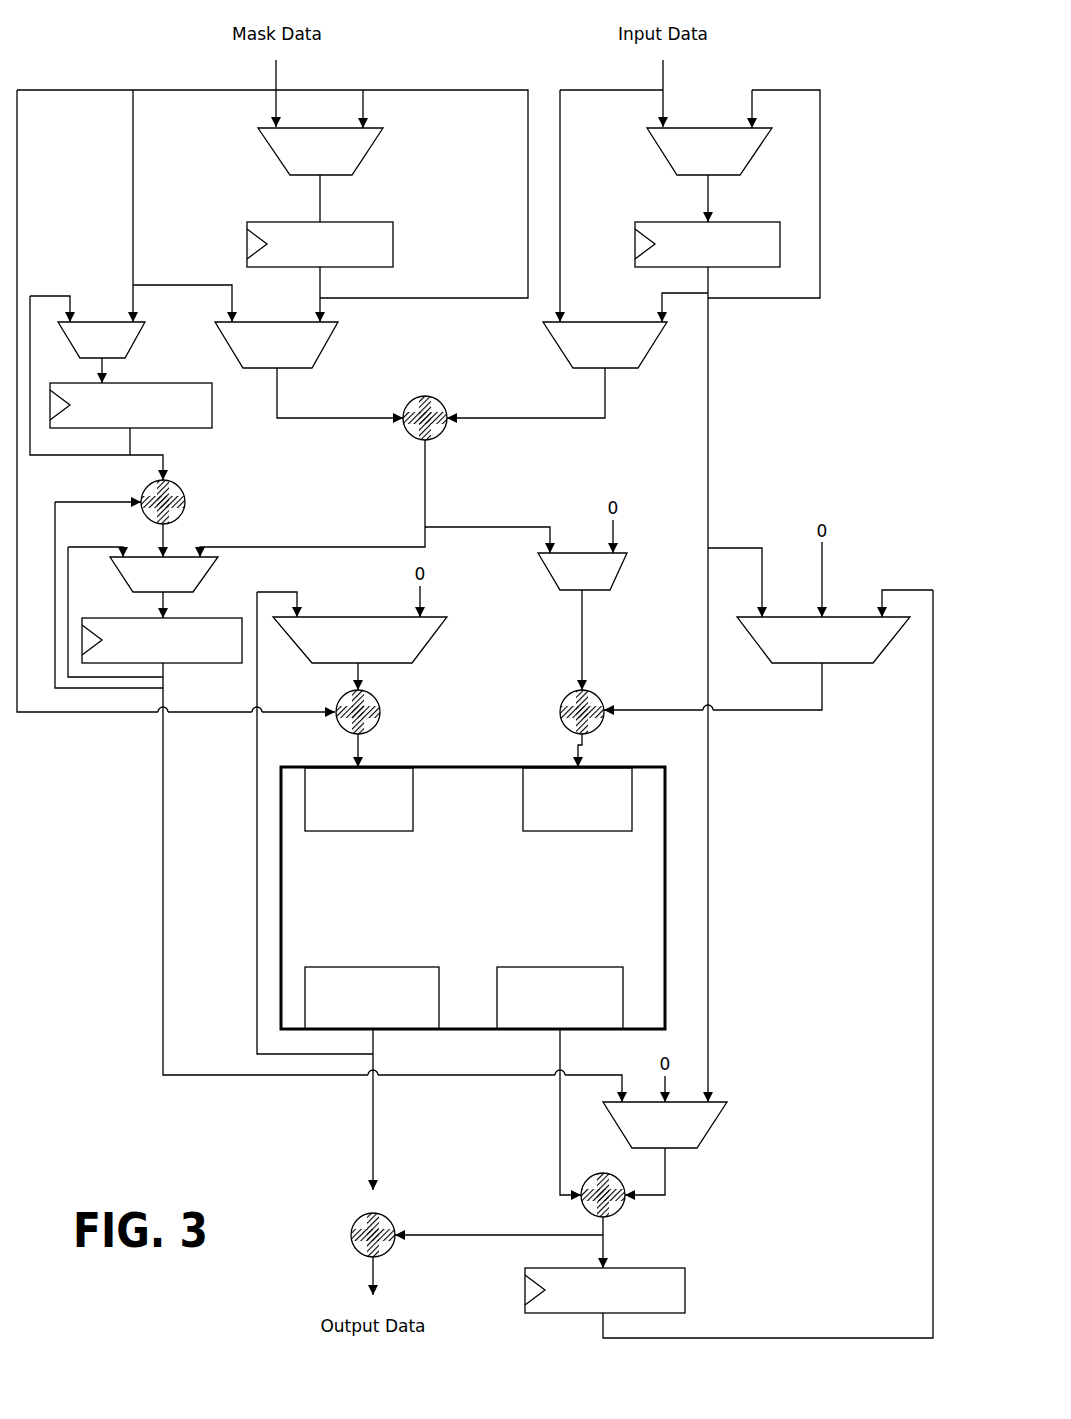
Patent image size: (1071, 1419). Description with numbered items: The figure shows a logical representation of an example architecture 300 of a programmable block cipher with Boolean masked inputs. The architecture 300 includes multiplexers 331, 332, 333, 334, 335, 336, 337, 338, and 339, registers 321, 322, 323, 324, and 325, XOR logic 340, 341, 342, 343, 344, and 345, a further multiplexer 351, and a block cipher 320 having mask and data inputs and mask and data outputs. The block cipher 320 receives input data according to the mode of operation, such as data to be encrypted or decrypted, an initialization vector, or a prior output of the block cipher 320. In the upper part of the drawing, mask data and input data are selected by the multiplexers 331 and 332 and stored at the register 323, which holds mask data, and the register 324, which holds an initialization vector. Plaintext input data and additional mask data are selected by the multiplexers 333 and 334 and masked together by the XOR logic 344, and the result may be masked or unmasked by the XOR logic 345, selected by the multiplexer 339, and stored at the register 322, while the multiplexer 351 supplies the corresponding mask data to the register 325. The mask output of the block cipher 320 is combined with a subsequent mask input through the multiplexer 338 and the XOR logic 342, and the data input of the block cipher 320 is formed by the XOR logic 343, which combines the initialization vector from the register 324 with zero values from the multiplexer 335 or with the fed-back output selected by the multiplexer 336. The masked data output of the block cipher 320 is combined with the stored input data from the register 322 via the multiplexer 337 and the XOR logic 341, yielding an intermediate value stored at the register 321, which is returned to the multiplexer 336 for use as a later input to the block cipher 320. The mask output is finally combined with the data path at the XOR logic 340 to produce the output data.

The architecture 300 is at (866, 84).
The block cipher 320 is at (443, 936).
The register 321 is at (605, 1290).
The register 322 is at (162, 640).
The register 323 is at (320, 244).
The register 324 is at (707, 244).
The register 325 is at (131, 405).
The multiplexer 331 is at (320, 151).
The multiplexer 332 is at (709, 151).
The multiplexer 333 is at (276, 345).
The multiplexer 334 is at (605, 345).
The multiplexer 335 is at (582, 571).
The multiplexer 336 is at (823, 640).
The multiplexer 337 is at (665, 1125).
The multiplexer 338 is at (360, 640).
The multiplexer 339 is at (164, 574).
The XOR logic 340 is at (351, 1235).
The XOR logic 341 is at (610, 1181).
The XOR logic 342 is at (380, 712).
The XOR logic 343 is at (560, 712).
The XOR logic 344 is at (428, 397).
The XOR logic 345 is at (185, 502).
The multiplexer 351 is at (101, 340).